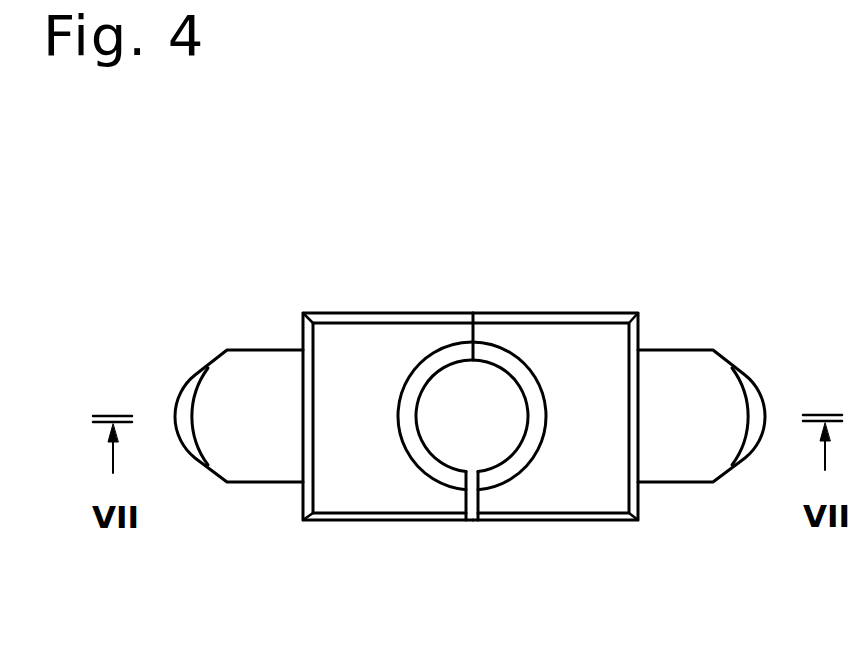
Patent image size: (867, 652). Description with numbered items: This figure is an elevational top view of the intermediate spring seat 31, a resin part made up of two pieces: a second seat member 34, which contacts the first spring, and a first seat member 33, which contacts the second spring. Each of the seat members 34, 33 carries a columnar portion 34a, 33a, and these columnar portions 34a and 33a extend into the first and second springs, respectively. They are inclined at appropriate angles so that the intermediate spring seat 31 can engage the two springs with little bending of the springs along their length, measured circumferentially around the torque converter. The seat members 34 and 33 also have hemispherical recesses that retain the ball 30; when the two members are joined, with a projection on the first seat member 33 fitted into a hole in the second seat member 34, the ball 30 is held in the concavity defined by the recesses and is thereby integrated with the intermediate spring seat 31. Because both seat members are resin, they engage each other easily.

The ball 30 is at (464, 398).
The intermediate spring seat 31 is at (317, 113).
The first seat member 33 is at (492, 298).
The second seat member 34 is at (443, 298).
The columnar portion 33a is at (678, 373).
The columnar portion 34a is at (268, 370).